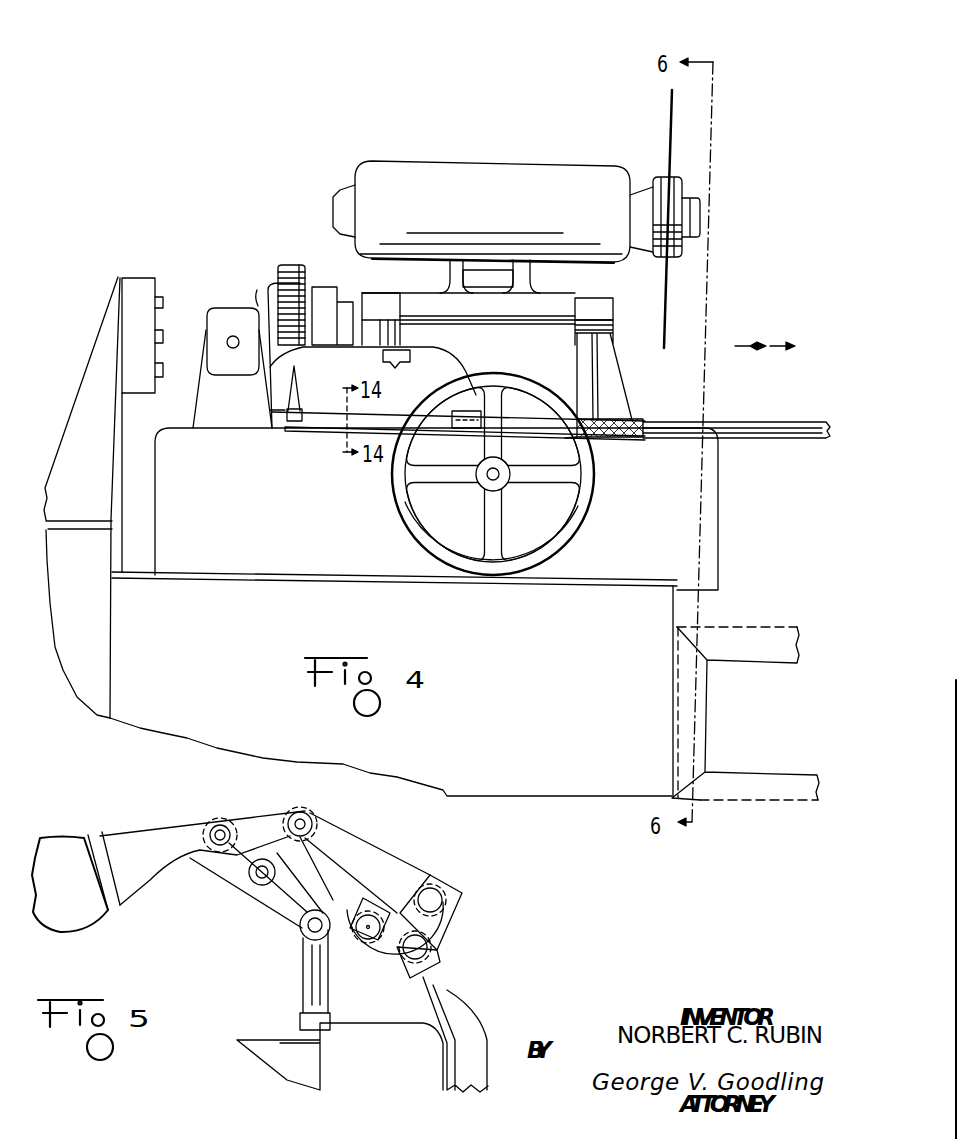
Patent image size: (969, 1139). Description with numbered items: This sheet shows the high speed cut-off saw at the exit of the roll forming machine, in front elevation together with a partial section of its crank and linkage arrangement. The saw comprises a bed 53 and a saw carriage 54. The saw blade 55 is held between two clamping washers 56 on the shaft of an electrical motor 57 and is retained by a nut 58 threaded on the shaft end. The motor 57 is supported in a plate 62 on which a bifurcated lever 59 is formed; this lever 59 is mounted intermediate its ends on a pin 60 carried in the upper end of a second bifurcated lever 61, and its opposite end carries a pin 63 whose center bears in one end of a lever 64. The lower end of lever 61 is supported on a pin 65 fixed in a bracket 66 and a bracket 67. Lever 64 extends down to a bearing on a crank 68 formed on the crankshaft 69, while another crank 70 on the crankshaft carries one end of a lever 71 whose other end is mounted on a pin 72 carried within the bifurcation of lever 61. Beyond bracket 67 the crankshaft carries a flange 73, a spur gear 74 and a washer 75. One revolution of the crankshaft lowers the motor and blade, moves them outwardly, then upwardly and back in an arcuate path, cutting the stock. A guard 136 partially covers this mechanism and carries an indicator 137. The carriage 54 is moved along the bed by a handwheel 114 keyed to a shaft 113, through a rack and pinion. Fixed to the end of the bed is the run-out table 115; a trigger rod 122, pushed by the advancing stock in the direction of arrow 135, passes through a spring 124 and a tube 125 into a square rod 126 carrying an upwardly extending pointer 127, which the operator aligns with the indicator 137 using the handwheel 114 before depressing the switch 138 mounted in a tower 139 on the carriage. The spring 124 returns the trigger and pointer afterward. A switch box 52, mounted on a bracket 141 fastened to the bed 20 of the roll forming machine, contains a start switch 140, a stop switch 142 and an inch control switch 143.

In FIG. 4, the bed of the roll forming machine 20 is at (80, 682).
In FIG. 4, the switch box 52 is at (138, 280).
In FIG. 4, the saw bed 53 is at (192, 735).
In FIG. 4, the saw carriage 54 is at (718, 520).
In FIG. 5, the saw carriage 54 is at (322, 1074).
In FIG. 4, the saw blade 55 is at (668, 112).
In FIG. 4, the clamping washers 56 is at (652, 187).
In FIG. 4, the electrical motor 57 is at (490, 170).
In FIG. 5, the electrical motor 57 is at (61, 836).
In FIG. 4, the nut 58 is at (700, 208).
In FIG. 5, the bifurcated lever 59 is at (150, 836).
In FIG. 5, the pin 60 is at (224, 822).
In FIG. 4, the bifurcated lever 61 is at (452, 294).
In FIG. 5, the bifurcated lever 61 is at (238, 870).
In FIG. 5, the plate 62 is at (100, 836).
In FIG. 5, the pin 63 is at (303, 812).
In FIG. 5, the lever 64 is at (376, 854).
In FIG. 5, the pin 65 is at (301, 932).
In FIG. 4, the bracket 66 is at (614, 368).
In FIG. 4, the bracket 67 is at (376, 298).
In FIG. 5, the bracket 67 is at (306, 976).
In FIG. 5, the crank 68 is at (446, 905).
In FIG. 5, the crankshaft 69 is at (440, 954).
In FIG. 5, the crank 70 is at (350, 952).
In FIG. 4, the lever 71 is at (515, 290).
In FIG. 5, the lever 71 is at (300, 858).
In FIG. 5, the pin 72 is at (256, 886).
In FIG. 4, the flange 73 is at (326, 290).
In FIG. 4, the spur gear 74 is at (291, 265).
In FIG. 4, the washer 75 is at (258, 302).
In FIG. 4, the shaft 113 is at (487, 481).
In FIG. 4, the handwheel 114 is at (591, 496).
In FIG. 4, the run-out table 115 is at (783, 627).
In FIG. 4, the trigger rod 122 is at (619, 441).
In FIG. 4, the compression spring 124 is at (636, 420).
In FIG. 4, the tube 125 is at (804, 421).
In FIG. 4, the square rod 126 is at (384, 414).
In FIG. 4, the pointer 127 is at (298, 395).
In FIG. 4, the arrow 135 is at (778, 328).
In FIG. 4, the guard 136 is at (458, 364).
In FIG. 4, the indicator 137 is at (383, 357).
In FIG. 4, the push button type switch 138 is at (229, 348).
In FIG. 4, the tower 139 is at (236, 316).
In FIG. 4, the push button type switch 140 is at (158, 376).
In FIG. 4, the bracket 141 is at (94, 350).
In FIG. 4, the push button type switch 142 is at (166, 298).
In FIG. 4, the push button switch 143 is at (163, 334).